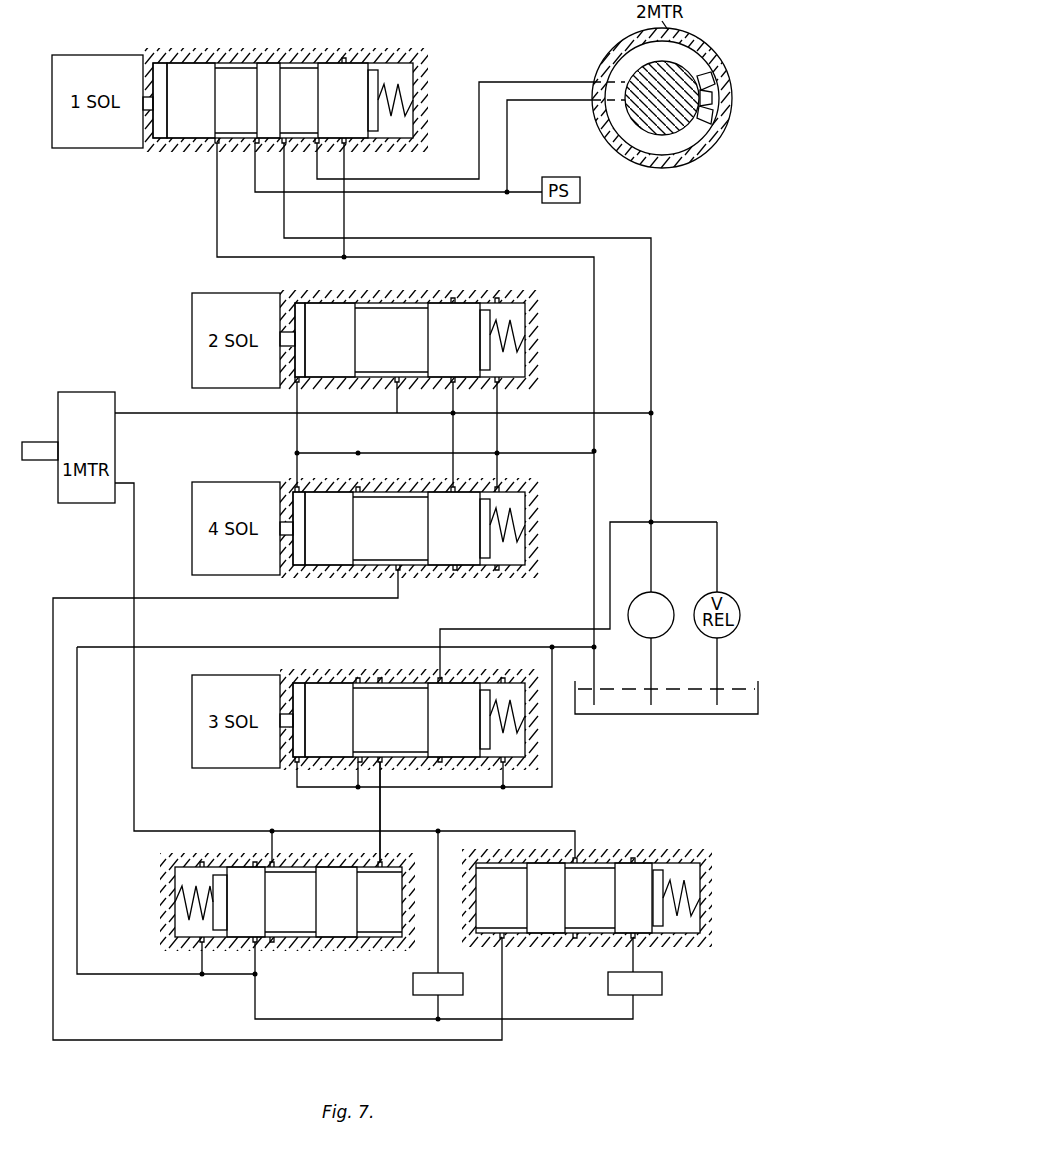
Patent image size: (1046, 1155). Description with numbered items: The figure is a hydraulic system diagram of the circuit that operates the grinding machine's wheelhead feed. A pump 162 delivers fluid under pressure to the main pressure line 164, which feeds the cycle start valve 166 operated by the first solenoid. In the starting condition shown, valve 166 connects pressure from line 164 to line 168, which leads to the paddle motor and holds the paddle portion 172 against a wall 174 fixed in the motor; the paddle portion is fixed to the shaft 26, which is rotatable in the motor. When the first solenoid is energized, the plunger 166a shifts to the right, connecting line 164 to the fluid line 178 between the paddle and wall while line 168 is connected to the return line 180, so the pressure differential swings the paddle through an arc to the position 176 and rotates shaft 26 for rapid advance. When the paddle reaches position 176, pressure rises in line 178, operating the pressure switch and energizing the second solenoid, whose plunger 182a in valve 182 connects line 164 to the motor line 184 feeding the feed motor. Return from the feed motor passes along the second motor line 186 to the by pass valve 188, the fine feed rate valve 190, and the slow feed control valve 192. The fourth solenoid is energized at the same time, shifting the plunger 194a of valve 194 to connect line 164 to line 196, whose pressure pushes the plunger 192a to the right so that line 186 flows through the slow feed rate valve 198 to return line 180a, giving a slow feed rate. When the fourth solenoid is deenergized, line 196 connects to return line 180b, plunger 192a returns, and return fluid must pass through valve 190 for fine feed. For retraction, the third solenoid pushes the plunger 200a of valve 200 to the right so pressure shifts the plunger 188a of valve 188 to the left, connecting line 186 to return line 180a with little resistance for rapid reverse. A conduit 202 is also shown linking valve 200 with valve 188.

The shaft 26 is at (645, 136).
The pump 162 is at (634, 600).
The main pressure line 164 is at (653, 316).
The cycle start valve 166 is at (268, 52).
The plunger 166a is at (206, 150).
The line 168 is at (495, 80).
The paddle portion 172 is at (711, 77).
The wall 174 is at (714, 128).
The paddle position 176 is at (688, 138).
The fluid line 178 is at (480, 193).
The return line 180 is at (571, 262).
The return line 180a is at (255, 998).
The return line 180b is at (456, 453).
The valve 182 is at (350, 298).
The plunger 182a is at (460, 300).
The motor line 184 is at (267, 414).
The second motor line 186 is at (134, 534).
The by pass valve 188 is at (358, 942).
The plunger 188a is at (330, 863).
The fine feed rate valve 190 is at (413, 986).
The slow feed control valve 192 is at (604, 852).
The plunger 192a is at (560, 940).
The valve 194 is at (412, 570).
The plunger 194a is at (470, 568).
The line 196 is at (289, 601).
The slow feed rate valve 198 is at (662, 982).
The valve 200 is at (330, 681).
The plunger 200a is at (406, 690).
The conduit 202 is at (380, 807).